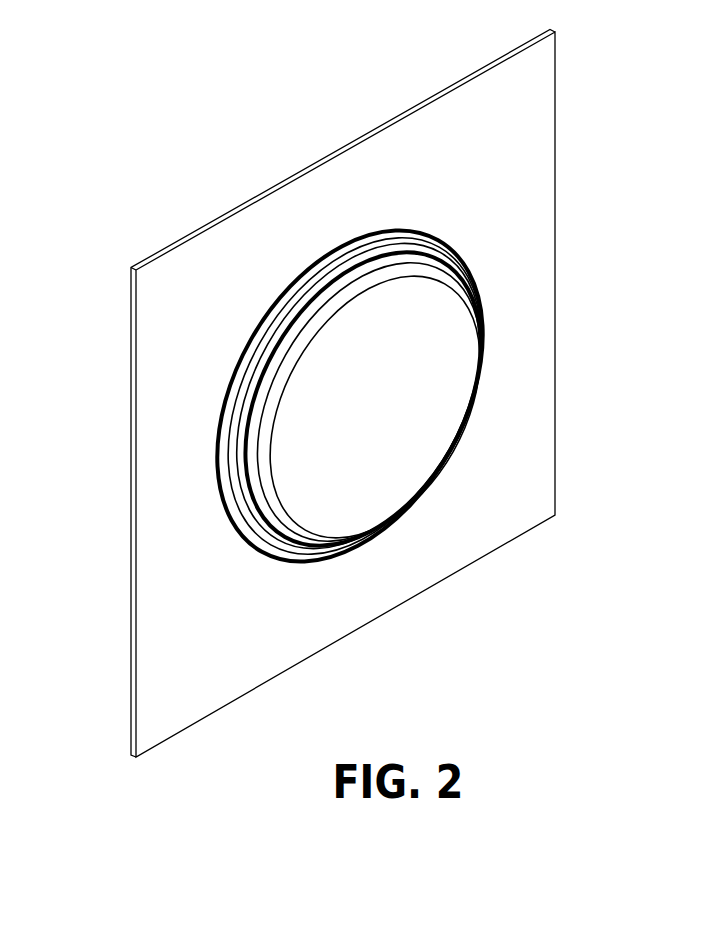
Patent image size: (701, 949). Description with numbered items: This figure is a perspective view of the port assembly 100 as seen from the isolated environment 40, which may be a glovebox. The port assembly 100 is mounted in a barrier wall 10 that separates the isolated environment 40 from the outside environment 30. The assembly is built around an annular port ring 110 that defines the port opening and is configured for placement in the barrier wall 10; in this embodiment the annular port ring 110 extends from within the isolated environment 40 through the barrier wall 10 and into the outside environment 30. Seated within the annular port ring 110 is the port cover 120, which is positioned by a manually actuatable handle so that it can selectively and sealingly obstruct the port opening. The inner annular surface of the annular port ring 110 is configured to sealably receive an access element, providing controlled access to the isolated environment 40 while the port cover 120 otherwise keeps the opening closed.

The barrier wall 10 is at (320, 394).
The outside environment 30 is at (74, 657).
The isolated environment 40 is at (521, 518).
The port assembly 100 is at (350, 391).
The annular port ring 110 is at (397, 239).
The port cover 120 is at (455, 355).